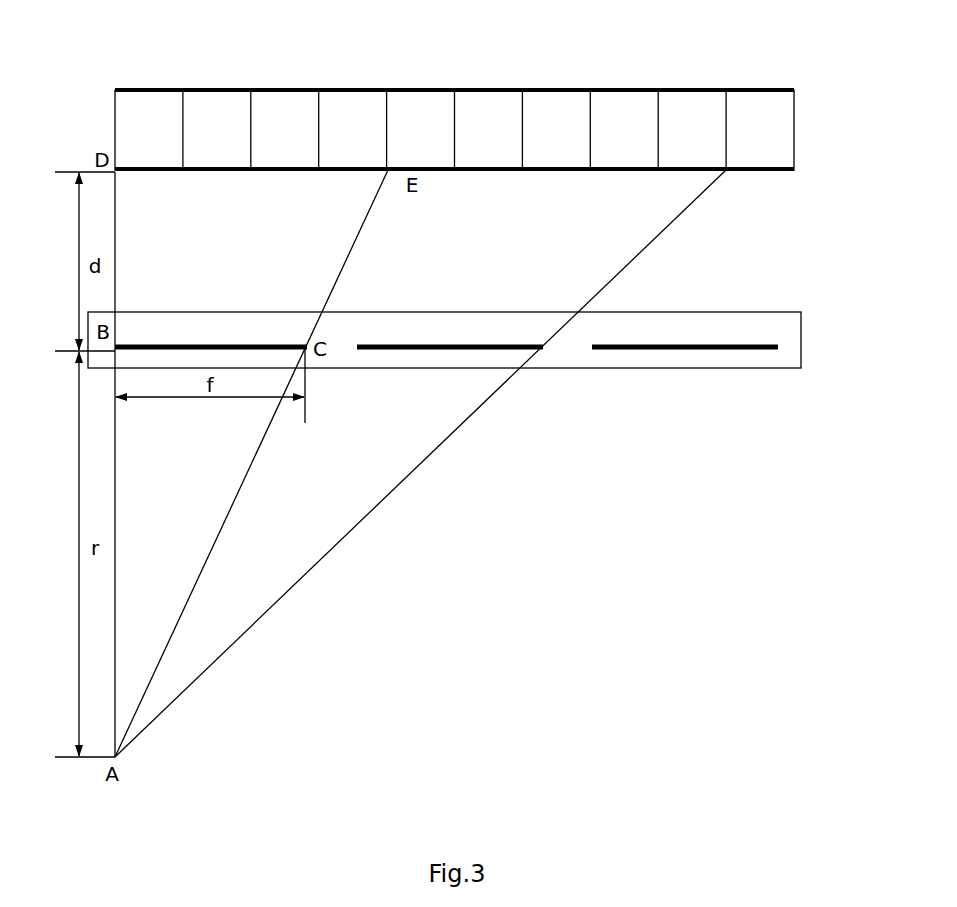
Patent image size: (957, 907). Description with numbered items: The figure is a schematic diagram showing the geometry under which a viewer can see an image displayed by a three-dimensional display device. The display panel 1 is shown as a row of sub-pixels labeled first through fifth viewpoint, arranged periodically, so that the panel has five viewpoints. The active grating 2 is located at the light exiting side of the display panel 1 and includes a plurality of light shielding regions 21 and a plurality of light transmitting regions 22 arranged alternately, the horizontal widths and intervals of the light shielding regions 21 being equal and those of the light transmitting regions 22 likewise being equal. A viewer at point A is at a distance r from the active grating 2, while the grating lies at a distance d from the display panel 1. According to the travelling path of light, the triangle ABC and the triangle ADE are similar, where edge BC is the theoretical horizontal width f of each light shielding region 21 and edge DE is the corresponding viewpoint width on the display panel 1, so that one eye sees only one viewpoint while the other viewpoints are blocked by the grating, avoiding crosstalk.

The display panel 1 is at (501, 88).
The active grating 2 is at (760, 311).
The light shielding region 21 is at (408, 343).
The light transmitting region 22 is at (573, 348).